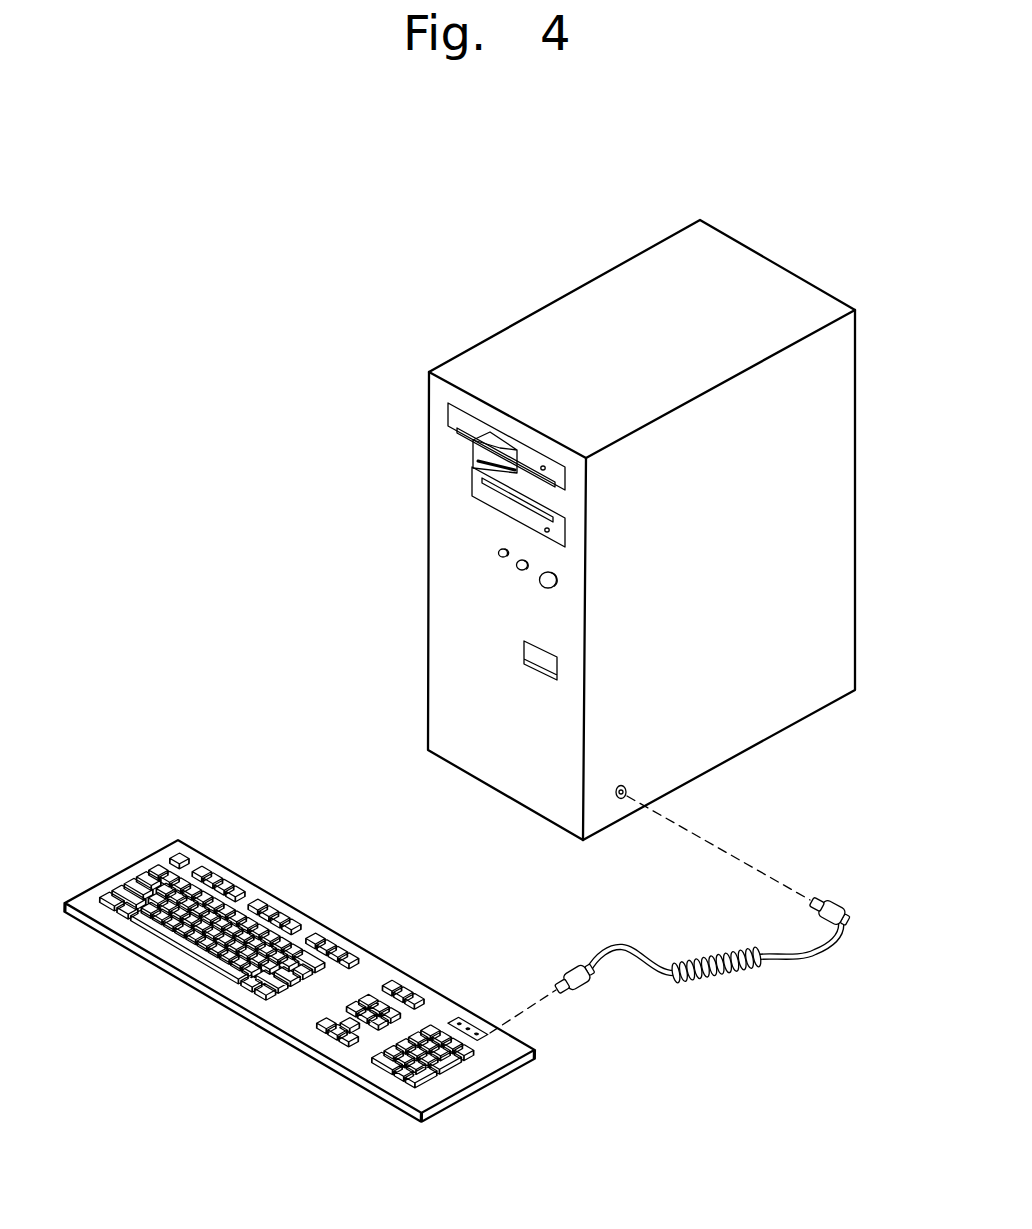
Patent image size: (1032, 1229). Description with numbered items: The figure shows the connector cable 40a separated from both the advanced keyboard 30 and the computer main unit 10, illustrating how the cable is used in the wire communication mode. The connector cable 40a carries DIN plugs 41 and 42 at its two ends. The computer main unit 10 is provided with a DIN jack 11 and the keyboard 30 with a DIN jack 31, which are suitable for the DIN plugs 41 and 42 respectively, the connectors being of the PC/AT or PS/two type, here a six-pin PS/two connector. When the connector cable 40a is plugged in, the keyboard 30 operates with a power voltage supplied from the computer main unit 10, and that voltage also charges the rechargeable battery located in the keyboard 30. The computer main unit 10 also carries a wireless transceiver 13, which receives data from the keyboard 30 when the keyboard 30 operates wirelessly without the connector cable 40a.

The computer main unit 10 is at (683, 543).
The DIN jack 11 is at (628, 786).
The wireless transceiver 13 is at (546, 662).
The advanced keyboard 30 is at (299, 952).
The DIN jack 31 is at (492, 1027).
The connector cable 40a is at (718, 951).
The DIN plug 41 is at (830, 905).
The DIN plug 42 is at (580, 960).